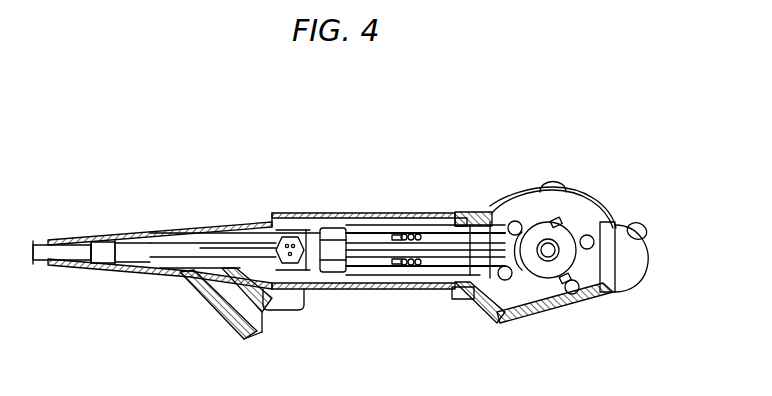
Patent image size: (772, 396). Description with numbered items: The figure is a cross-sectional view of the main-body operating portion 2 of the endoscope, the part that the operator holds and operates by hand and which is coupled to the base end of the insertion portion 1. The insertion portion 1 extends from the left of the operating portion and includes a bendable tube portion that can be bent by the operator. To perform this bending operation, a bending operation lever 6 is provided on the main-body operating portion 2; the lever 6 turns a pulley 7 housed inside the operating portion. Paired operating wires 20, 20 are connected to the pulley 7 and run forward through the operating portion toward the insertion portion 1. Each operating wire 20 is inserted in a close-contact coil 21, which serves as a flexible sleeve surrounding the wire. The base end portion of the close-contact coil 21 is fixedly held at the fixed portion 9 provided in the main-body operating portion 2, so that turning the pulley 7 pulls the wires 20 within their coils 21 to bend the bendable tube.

The insertion portion 1 is at (38, 248).
The main-body operating portion 2 is at (420, 210).
The bending operation lever 6 is at (558, 180).
The pulley 7 is at (545, 276).
The fixed portion 9 is at (328, 218).
The operating wire 20 is at (460, 215).
The close-contact coil 21 is at (302, 222).